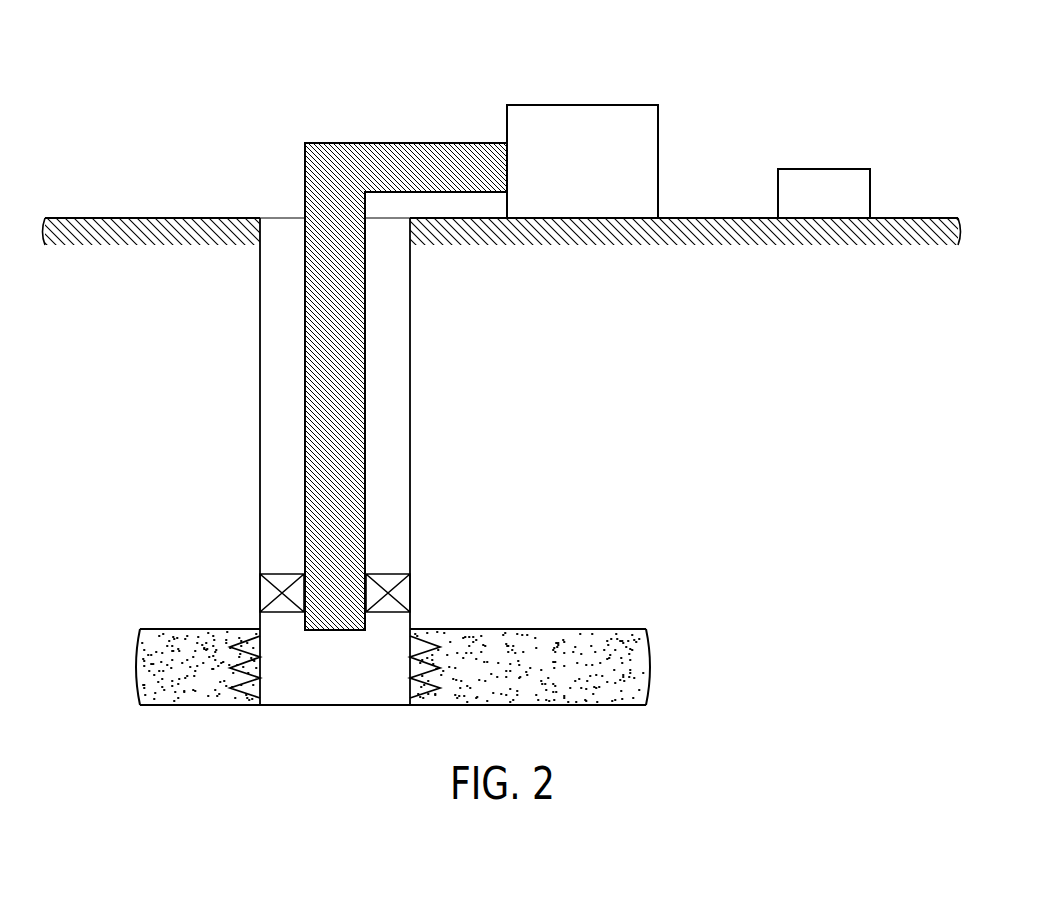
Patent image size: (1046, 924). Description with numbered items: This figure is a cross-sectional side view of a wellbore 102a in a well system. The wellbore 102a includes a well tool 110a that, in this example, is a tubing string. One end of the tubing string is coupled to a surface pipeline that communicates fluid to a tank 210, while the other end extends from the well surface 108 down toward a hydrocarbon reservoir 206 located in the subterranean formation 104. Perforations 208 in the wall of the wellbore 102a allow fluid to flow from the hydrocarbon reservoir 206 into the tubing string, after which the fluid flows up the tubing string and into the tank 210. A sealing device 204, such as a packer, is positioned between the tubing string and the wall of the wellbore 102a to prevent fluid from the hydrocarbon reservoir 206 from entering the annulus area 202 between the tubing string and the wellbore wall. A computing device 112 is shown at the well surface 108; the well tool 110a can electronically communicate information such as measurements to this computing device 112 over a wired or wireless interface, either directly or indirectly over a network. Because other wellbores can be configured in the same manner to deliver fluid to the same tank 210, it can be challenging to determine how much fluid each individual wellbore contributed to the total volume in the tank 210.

The well surface 108 is at (898, 218).
The tank 210 is at (583, 105).
The computing device 112 is at (825, 169).
The wellbore 102a is at (410, 420).
The annulus area 202 is at (395, 482).
The well tool 110a is at (355, 370).
The sealing device 204 is at (403, 587).
The hydrocarbon reservoir 206 is at (546, 629).
The perforations 208 is at (428, 648).
The subterranean formation 104 is at (537, 407).